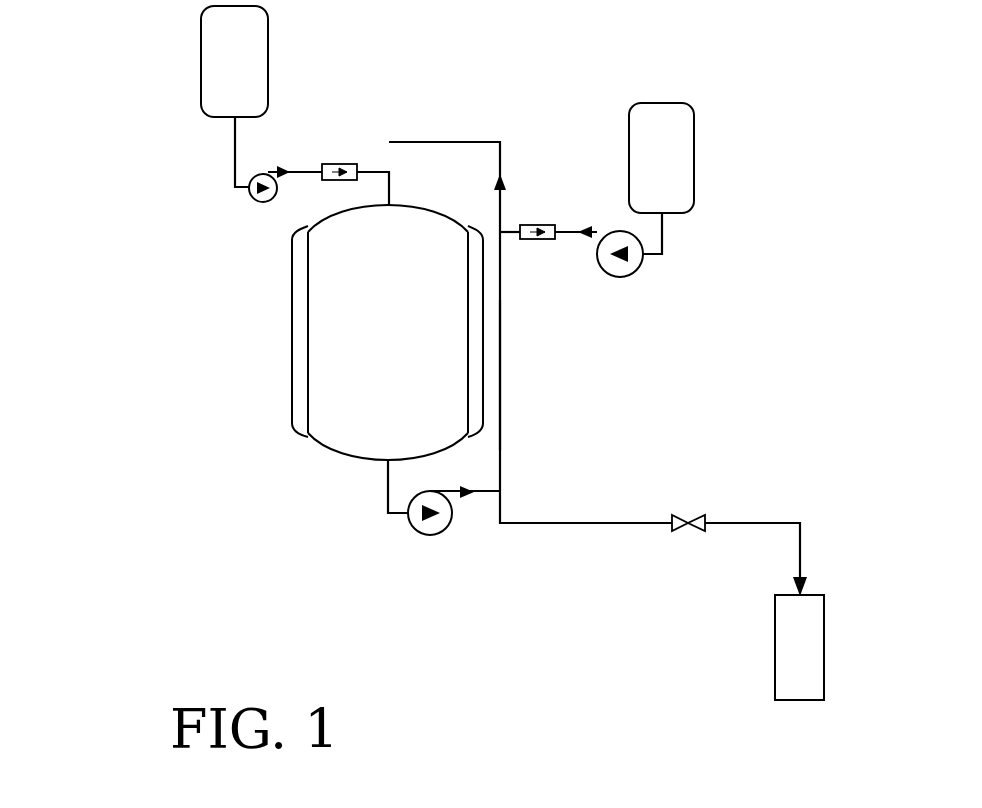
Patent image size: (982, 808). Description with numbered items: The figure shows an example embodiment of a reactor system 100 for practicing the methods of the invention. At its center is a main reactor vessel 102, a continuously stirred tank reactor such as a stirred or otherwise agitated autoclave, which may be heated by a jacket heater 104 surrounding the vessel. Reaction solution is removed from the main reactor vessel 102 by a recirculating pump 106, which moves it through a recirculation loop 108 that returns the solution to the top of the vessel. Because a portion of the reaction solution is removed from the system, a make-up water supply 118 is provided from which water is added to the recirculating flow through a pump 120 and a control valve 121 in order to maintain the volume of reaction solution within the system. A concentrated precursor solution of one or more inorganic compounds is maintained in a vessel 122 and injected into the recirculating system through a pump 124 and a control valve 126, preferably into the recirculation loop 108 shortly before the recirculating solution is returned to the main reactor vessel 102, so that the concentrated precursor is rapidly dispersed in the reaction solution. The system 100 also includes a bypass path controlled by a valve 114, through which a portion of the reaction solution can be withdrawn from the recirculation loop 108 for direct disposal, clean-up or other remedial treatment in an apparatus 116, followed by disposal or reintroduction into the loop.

The system 100 is at (395, 25).
The main reactor vessel 102 is at (340, 363).
The jacket heater 104 is at (292, 284).
The recirculating pump 106 is at (410, 527).
The recirculation loop 108 is at (500, 415).
The valve 114 is at (702, 511).
The apparatus 116 is at (797, 700).
The make-up water supply 118 is at (694, 140).
The pump 120 is at (627, 275).
The control valve 121 is at (535, 225).
The vessel 122 is at (201, 93).
The pump 124 is at (257, 201).
The control valve 126 is at (340, 165).